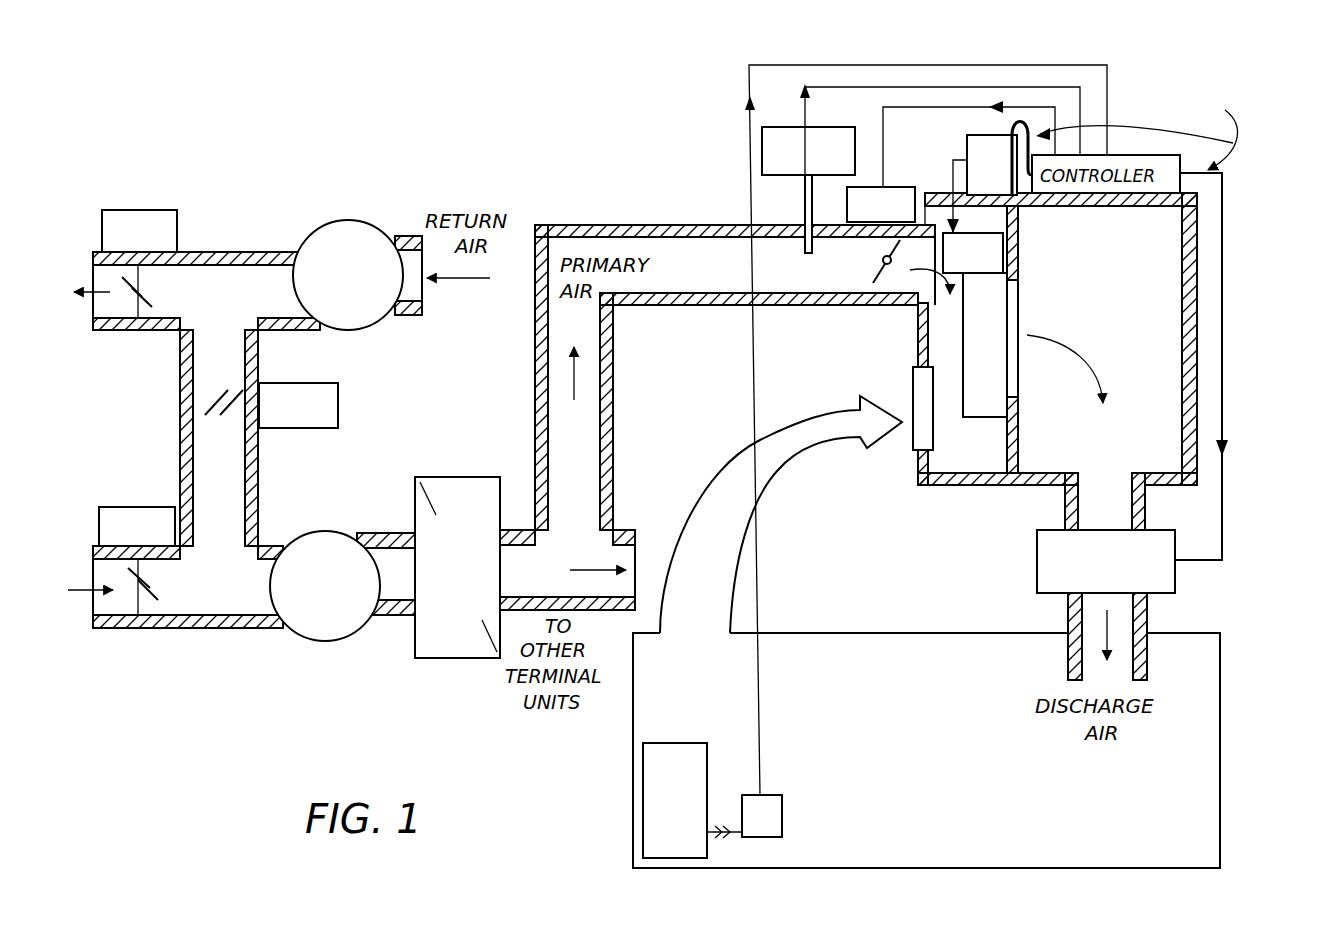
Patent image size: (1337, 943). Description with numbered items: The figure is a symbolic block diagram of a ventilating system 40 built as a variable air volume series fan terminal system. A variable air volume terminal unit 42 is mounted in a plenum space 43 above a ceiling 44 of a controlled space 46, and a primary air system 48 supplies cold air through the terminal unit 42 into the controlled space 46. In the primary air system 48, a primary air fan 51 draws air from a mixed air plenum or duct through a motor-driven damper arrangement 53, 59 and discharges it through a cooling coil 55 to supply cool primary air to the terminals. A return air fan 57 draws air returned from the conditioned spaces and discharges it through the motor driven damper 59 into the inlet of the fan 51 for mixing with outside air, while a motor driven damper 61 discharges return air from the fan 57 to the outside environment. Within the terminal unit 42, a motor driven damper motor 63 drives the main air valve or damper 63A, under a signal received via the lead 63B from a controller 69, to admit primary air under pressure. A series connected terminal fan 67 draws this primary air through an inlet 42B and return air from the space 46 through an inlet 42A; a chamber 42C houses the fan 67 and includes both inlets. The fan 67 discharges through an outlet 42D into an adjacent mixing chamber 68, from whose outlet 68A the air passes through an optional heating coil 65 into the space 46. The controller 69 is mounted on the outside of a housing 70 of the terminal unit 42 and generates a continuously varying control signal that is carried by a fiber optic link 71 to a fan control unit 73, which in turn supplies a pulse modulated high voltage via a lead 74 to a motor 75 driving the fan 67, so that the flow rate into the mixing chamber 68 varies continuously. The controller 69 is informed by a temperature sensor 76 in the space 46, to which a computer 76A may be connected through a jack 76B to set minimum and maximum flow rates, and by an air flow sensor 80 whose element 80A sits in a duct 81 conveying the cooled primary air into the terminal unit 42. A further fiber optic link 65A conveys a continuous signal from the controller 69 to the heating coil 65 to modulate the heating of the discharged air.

The ventilating system 40 is at (1240, 199).
The variable air volume terminal unit 42 is at (943, 482).
The inlet 42A is at (910, 433).
The inlet 42B is at (914, 306).
The chamber 42C is at (985, 462).
The outlet 42D is at (1017, 317).
The plenum space 43 is at (1014, 566).
The ceiling 44 is at (968, 632).
The controlled space 46 is at (633, 828).
The primary air system 48 is at (250, 664).
The primary air fan 51 is at (345, 498).
The motor-driven damper 53 is at (140, 498).
The cooling coil 55 is at (437, 660).
The return air fan 57 is at (333, 221).
The motor driven damper 59 is at (342, 384).
The motor driven damper 61 is at (184, 218).
The motor driven damper motor 63 is at (893, 187).
The main air valve or damper 63A is at (878, 265).
The lead 63B is at (892, 107).
The heating coil 65 is at (1175, 578).
The fiber optic link 65A is at (1227, 405).
The terminal fan 67 is at (1000, 392).
The mixing chamber 68 is at (1157, 335).
The outlet 68A is at (1062, 509).
The controller 69 is at (1152, 196).
The housing 70 is at (1190, 478).
The fiber optic link 71 is at (1022, 120).
The fan control unit 73 is at (975, 135).
The lead 74 is at (953, 179).
The motor 75 is at (1010, 266).
The temperature sensor 76 is at (782, 795).
The computer 76A is at (687, 743).
The jack 76B is at (740, 845).
The air flow sensor 80 is at (852, 136).
The element 80A is at (797, 255).
The duct 81 is at (887, 303).